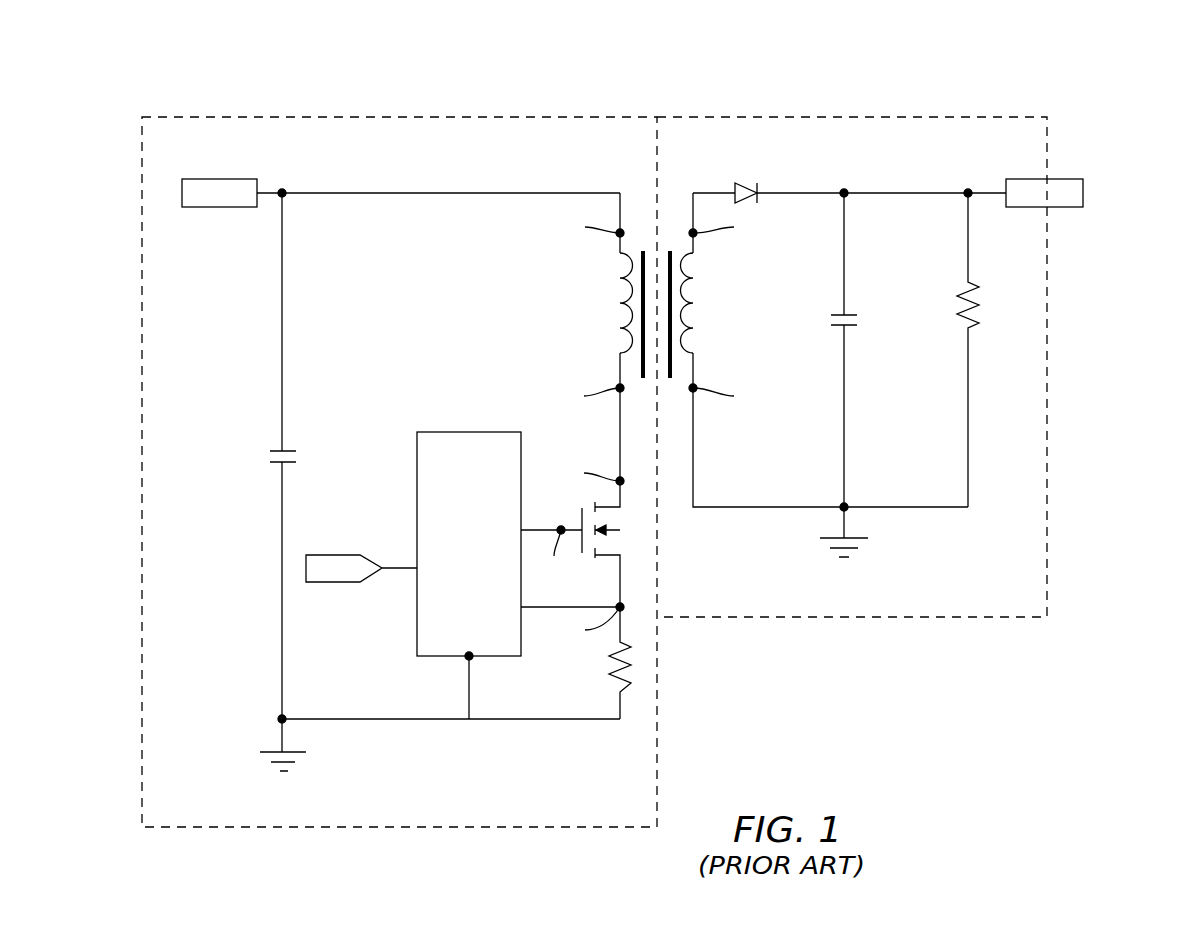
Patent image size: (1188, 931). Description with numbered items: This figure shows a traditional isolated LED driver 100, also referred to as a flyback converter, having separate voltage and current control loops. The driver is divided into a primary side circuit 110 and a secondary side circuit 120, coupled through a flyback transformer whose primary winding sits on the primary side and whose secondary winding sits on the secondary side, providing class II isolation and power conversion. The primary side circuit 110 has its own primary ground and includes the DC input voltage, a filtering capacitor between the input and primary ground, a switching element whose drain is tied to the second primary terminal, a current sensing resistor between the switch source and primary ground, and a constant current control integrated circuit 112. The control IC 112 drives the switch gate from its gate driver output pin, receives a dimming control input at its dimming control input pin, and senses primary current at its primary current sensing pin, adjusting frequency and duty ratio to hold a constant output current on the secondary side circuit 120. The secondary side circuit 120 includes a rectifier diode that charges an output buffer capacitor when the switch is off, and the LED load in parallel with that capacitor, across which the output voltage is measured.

The isolated LED driver 100 is at (1117, 128).
The primary side circuit 110 is at (409, 119).
The constant current control integrated circuit 112 is at (468, 432).
The secondary side circuit 120 is at (837, 119).